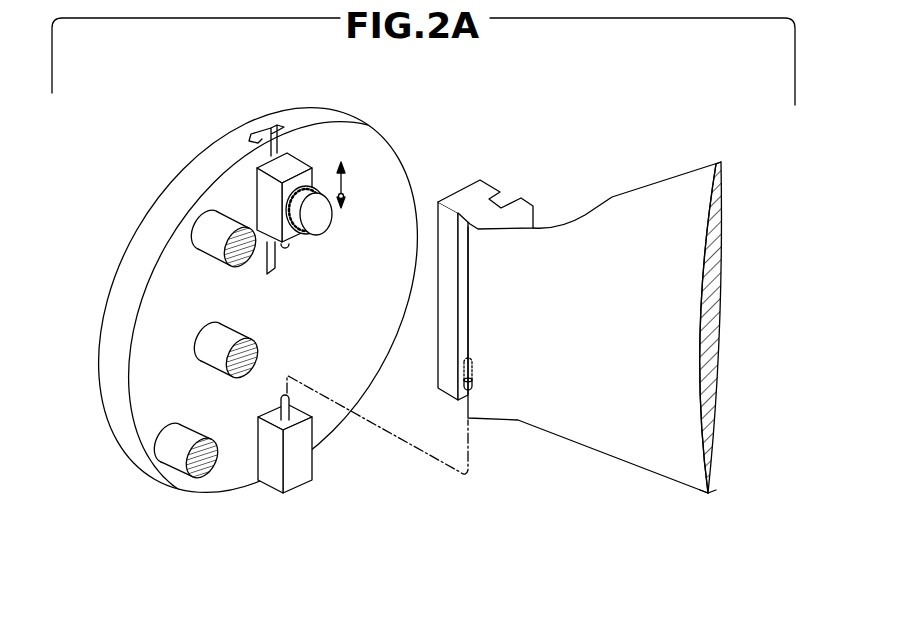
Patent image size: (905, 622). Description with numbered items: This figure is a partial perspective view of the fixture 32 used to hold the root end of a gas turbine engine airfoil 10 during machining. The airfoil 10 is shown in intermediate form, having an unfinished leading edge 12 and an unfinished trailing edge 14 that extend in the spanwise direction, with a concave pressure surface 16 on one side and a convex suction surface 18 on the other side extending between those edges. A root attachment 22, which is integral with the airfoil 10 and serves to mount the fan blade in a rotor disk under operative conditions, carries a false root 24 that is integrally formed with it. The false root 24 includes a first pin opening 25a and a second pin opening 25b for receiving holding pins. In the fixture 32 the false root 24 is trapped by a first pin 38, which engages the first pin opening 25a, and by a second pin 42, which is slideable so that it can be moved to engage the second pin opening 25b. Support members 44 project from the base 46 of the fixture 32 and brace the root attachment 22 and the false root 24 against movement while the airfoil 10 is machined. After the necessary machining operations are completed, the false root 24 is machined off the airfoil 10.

The airfoil 10 is at (600, 303).
The unfinished leading edge 12 is at (718, 160).
The unfinished trailing edge 14 is at (686, 492).
The pressure surface 16 is at (720, 310).
The suction surface 18 is at (663, 408).
The root attachment 22 is at (520, 206).
The false root 24 is at (465, 284).
The first pin opening 25a is at (462, 395).
The second pin opening 25b is at (468, 193).
The fixture 32 is at (272, 307).
The first pin 38 is at (280, 404).
The second pin 42 is at (291, 252).
The support members 44 is at (212, 248).
The base 46 is at (355, 353).